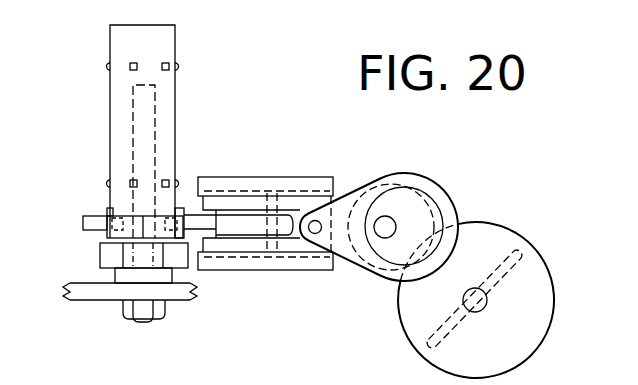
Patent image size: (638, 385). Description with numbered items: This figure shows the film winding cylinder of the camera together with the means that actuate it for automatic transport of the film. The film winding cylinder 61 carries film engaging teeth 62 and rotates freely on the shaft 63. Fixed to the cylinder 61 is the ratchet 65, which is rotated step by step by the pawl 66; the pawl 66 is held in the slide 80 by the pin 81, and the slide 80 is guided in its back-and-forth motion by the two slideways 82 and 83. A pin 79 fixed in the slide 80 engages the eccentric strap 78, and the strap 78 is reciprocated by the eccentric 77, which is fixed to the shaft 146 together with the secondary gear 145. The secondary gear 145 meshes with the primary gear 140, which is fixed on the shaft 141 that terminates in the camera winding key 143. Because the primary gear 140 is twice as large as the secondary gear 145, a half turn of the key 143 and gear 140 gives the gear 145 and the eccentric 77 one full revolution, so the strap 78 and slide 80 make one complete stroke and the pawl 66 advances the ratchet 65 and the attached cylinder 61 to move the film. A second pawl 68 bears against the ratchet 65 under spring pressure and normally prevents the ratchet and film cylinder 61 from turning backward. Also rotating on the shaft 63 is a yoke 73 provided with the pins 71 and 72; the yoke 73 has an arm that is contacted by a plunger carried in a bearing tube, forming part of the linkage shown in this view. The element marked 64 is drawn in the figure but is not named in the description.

The film winding cylinder 61 is at (125, 132).
The film engaging teeth 62 is at (107, 66).
The shaft 63 is at (148, 110).
The bolt 64 is at (124, 310).
The ratchet 65 is at (138, 222).
The pawl 66 is at (250, 226).
The pawl 68 is at (83, 222).
The pin 71 is at (185, 210).
The pin 72 is at (107, 212).
The yoke 73 is at (108, 255).
The eccentric 77 is at (433, 210).
The eccentric strap 78 is at (409, 183).
The pin 79 is at (318, 225).
The slide 80 is at (296, 240).
The pin 81 is at (281, 192).
The slideway 82 is at (238, 184).
The slideway 83 is at (242, 262).
The primary gear 140 is at (527, 282).
The shaft 141 is at (480, 308).
The camera winding key 143 is at (490, 287).
The secondary gear 145 is at (413, 227).
The shaft 146 is at (385, 230).